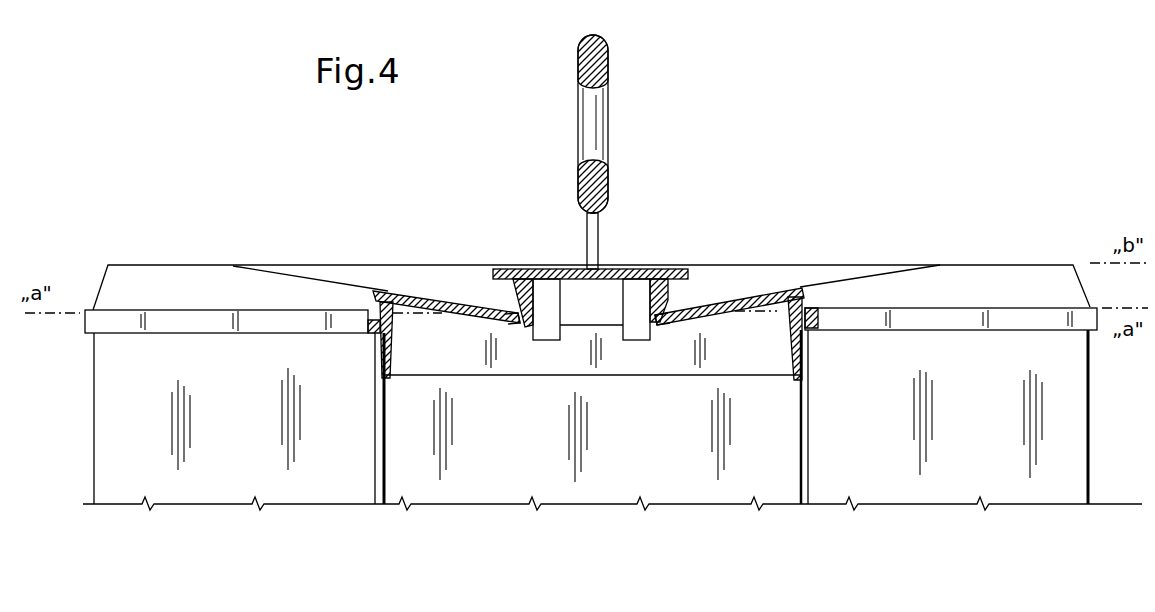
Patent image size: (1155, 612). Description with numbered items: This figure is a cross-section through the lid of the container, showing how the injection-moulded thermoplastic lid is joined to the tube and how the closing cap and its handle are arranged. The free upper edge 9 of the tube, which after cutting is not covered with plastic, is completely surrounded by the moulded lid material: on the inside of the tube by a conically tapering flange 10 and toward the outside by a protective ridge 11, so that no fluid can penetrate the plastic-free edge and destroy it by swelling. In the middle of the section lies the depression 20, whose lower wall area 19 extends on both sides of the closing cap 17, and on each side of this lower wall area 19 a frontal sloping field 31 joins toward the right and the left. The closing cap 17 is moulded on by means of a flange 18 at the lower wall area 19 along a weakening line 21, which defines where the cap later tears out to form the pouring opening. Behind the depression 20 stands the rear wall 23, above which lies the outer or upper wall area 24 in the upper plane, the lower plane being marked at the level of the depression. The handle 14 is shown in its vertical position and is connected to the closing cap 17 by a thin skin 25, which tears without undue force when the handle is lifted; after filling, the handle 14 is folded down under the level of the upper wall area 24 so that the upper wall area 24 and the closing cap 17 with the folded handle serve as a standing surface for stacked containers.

The upper edge 9 is at (380, 342).
The conically tapering flange 10 is at (784, 340).
The protective ridge 11 is at (95, 321).
The handle 14 is at (593, 187).
The closing cap 17 is at (608, 246).
The flange 18 is at (527, 300).
The lower wall area 19 is at (680, 318).
The depression 20 is at (805, 280).
The weakening line 21 is at (520, 323).
The rear wall 23 is at (317, 272).
The upper wall area 24 is at (138, 263).
The thin skin 25 is at (583, 252).
The frontal sloping field 31 is at (405, 292).